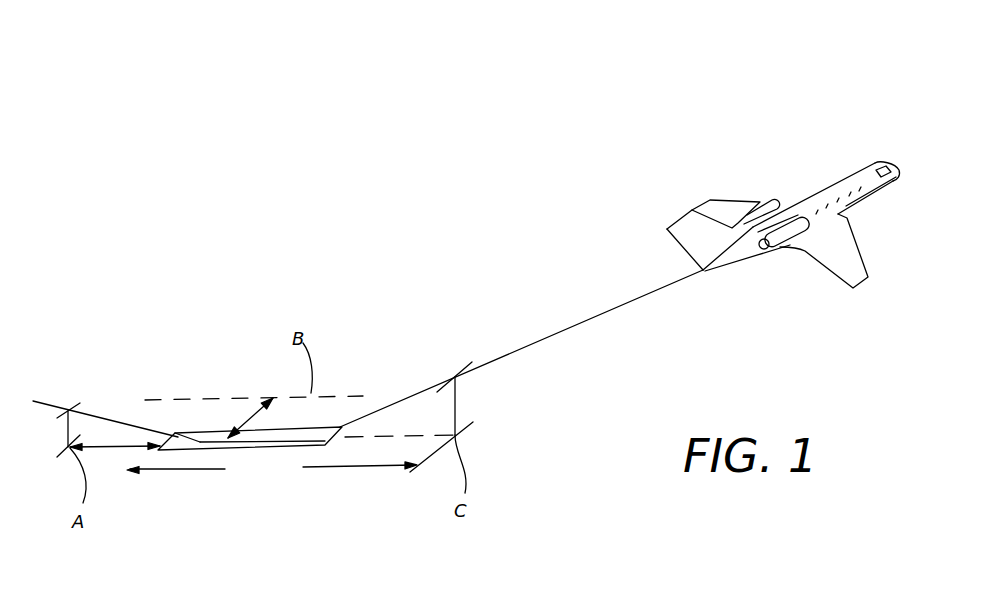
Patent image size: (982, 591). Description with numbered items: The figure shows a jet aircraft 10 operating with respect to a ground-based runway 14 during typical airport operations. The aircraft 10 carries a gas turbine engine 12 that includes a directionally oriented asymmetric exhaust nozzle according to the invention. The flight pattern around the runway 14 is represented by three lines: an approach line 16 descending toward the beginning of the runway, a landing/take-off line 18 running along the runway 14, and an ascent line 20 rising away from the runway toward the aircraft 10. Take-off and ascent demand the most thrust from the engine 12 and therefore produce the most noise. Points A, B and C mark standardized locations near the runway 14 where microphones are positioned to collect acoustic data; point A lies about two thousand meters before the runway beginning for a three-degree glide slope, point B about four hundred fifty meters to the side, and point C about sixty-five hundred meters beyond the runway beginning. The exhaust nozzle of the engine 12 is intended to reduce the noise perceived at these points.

The aircraft 10 is at (847, 129).
The gas turbine engine 12 is at (775, 248).
The ground-based runway 14 is at (307, 447).
The approach line 16 is at (57, 405).
The landing/take-off line 18 is at (262, 445).
The ascent line 20 is at (418, 390).